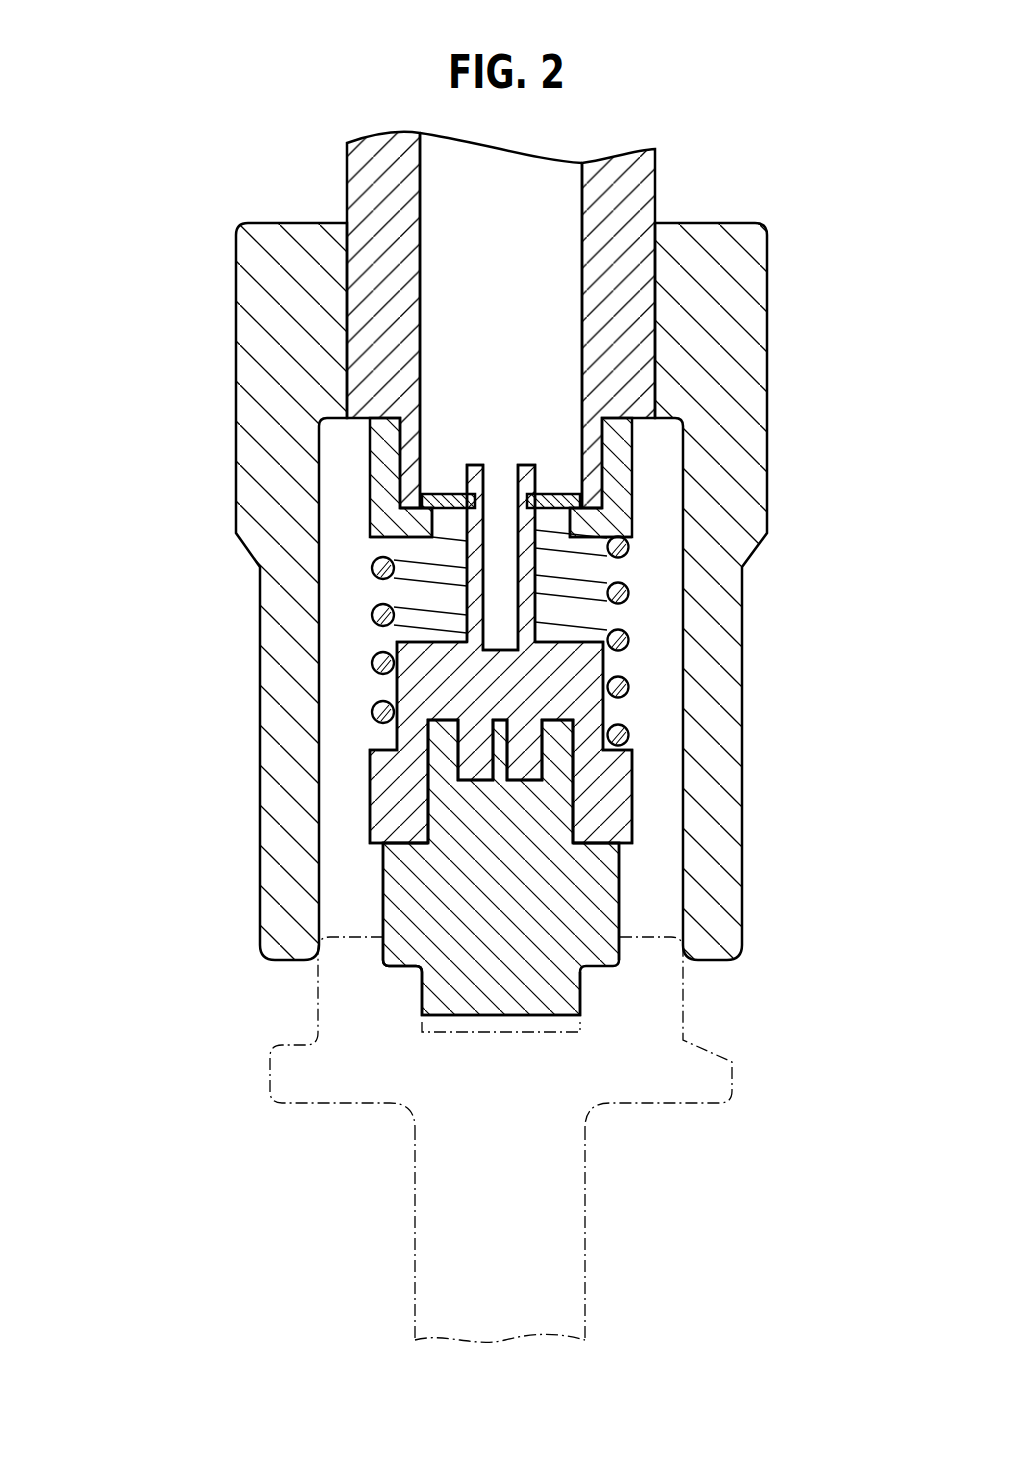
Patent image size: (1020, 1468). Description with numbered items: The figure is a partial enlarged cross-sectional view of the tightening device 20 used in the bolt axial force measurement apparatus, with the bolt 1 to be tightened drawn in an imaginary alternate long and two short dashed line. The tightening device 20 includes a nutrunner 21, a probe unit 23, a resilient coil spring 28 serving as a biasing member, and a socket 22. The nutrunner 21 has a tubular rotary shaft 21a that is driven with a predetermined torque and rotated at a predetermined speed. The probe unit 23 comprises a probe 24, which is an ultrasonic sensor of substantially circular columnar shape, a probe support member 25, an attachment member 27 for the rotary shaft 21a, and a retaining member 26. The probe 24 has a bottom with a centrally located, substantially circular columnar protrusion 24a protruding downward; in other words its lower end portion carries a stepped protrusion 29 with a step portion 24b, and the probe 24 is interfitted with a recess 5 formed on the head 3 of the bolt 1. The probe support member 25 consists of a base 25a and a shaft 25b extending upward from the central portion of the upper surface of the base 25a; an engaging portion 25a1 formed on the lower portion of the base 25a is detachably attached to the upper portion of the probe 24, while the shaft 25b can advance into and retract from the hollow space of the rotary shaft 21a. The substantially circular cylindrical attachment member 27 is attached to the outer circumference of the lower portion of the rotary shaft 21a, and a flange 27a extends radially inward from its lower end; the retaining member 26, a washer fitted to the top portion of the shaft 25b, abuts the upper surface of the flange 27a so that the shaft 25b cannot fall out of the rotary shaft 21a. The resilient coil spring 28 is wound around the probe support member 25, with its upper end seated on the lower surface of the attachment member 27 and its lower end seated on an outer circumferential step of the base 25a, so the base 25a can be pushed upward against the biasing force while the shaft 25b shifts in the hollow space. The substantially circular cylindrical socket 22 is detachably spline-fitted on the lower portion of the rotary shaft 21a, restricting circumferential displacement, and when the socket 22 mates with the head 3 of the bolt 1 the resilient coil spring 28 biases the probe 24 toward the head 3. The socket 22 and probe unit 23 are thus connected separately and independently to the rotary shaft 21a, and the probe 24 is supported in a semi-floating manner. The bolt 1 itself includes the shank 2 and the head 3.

The bolt 1 is at (346, 1130).
The shank 2 is at (560, 1190).
The head 3 is at (658, 1010).
The recess 5 is at (463, 1007).
The tightening device 20 is at (797, 198).
The nutrunner 21 is at (615, 198).
The rotary shaft 21a is at (615, 198).
The socket 22 is at (728, 698).
The probe unit 23 is at (125, 475).
The probe 24 is at (450, 875).
The protrusion 24a is at (527, 1017).
The step portion 24b is at (403, 962).
The probe support member 25 is at (195, 578).
The base 25a is at (487, 692).
The engaging portion 25a1 is at (562, 802).
The shaft 25b is at (470, 574).
The retaining member 26 is at (450, 496).
The attachment member 27 is at (387, 502).
The flange 27a is at (415, 527).
The resilient coil spring 28 is at (595, 585).
The stepped protrusion 29 is at (500, 947).